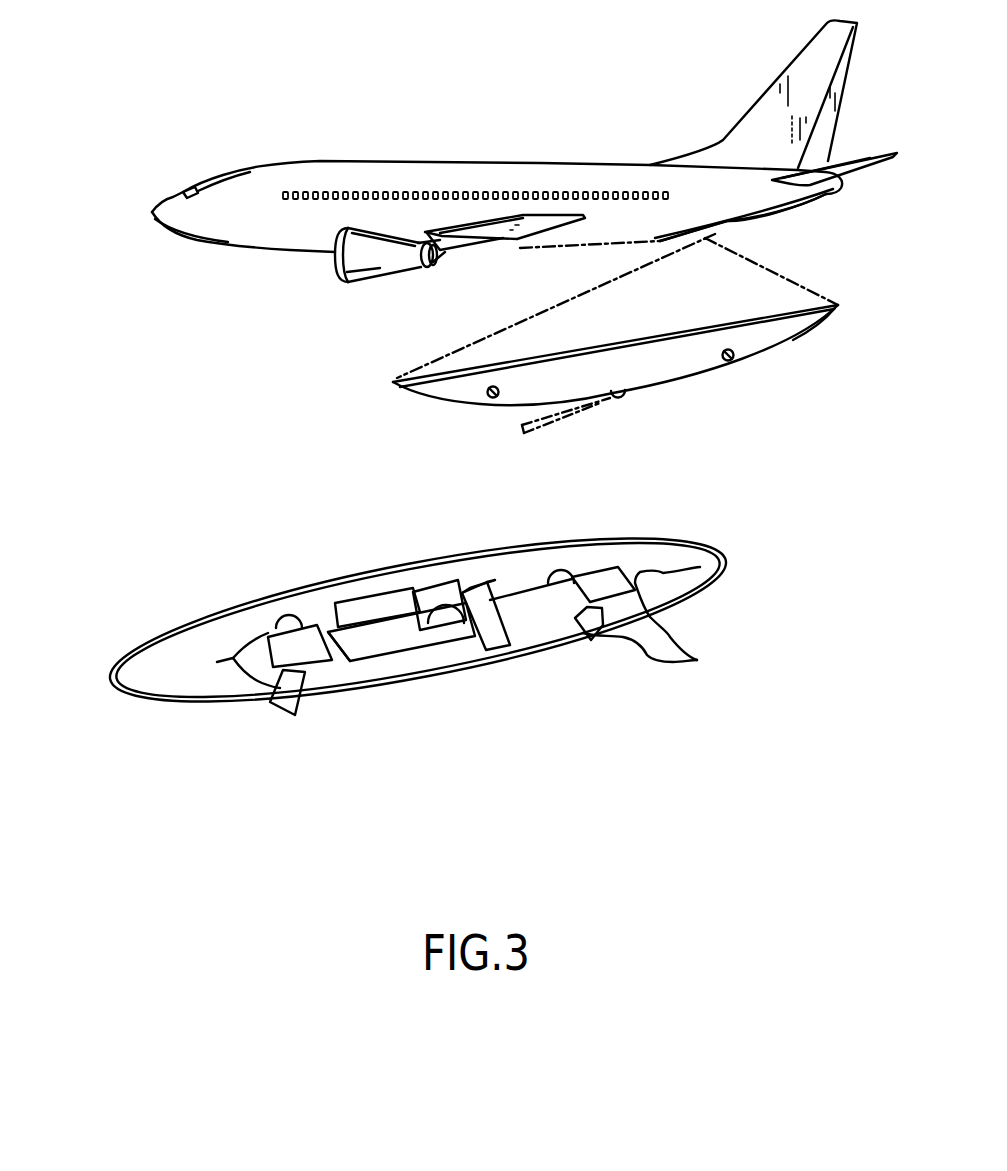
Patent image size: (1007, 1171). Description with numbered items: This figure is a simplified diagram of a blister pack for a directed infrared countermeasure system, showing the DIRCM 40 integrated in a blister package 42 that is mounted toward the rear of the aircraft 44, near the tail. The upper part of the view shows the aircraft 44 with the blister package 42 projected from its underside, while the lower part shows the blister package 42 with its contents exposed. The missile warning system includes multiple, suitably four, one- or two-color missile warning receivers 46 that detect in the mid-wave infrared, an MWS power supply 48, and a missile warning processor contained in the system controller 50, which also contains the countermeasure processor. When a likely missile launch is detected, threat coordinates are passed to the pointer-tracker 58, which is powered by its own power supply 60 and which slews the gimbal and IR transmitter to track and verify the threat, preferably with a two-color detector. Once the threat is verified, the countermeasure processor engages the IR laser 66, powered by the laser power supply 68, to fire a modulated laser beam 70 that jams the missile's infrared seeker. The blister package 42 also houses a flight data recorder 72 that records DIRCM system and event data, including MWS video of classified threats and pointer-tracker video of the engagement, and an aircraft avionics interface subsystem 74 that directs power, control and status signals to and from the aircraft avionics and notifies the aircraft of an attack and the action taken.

The DIRCM 40 is at (133, 577).
The blister package 42 is at (823, 328).
The aircraft 44 is at (246, 166).
The missile warning receivers 46 is at (481, 394).
The MWS power supply 48 is at (372, 593).
The system controller 50 is at (338, 650).
The pointer-tracker 58 is at (627, 394).
The power supply 60 is at (403, 645).
The IR laser 66 is at (500, 618).
The laser power supply 68 is at (600, 578).
The modulated laser beam 70 is at (550, 423).
The flight data recorder 72 is at (282, 638).
The aircraft avionics interface subsystem 74 is at (447, 585).